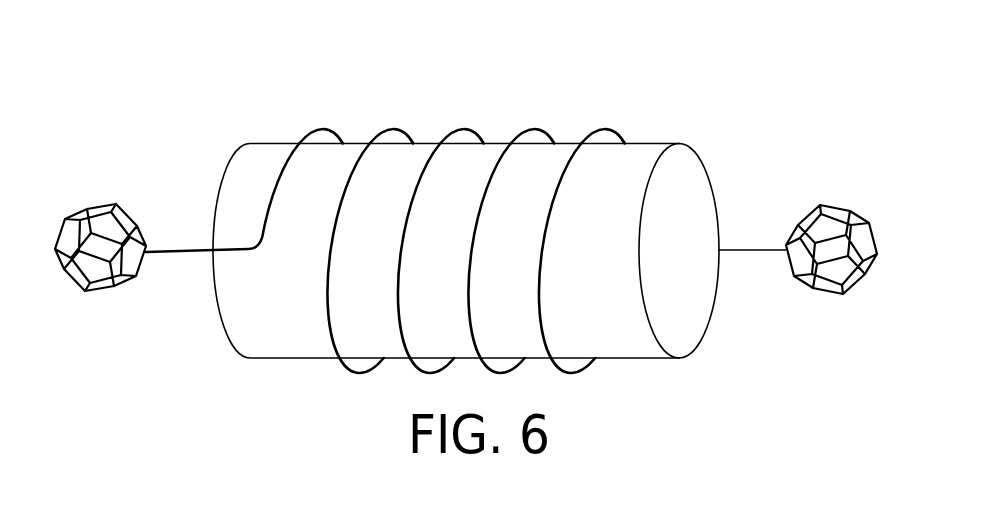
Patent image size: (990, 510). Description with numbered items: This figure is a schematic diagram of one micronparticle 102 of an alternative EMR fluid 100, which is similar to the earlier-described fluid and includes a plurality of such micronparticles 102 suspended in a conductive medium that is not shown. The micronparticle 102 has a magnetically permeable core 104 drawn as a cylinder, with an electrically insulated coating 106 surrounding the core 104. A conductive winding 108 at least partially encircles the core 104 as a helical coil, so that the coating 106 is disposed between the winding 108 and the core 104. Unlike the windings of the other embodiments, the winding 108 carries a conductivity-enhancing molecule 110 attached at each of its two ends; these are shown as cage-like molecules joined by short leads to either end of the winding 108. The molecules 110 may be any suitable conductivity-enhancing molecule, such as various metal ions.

The EMR fluid 100 is at (342, 76).
The micronparticle 102 is at (633, 160).
The magnetically permeable core 104 is at (705, 230).
The electrically insulated coating 106 is at (693, 190).
The conductive winding 108 is at (543, 129).
The conductivity-enhancing molecule 110 is at (840, 220).